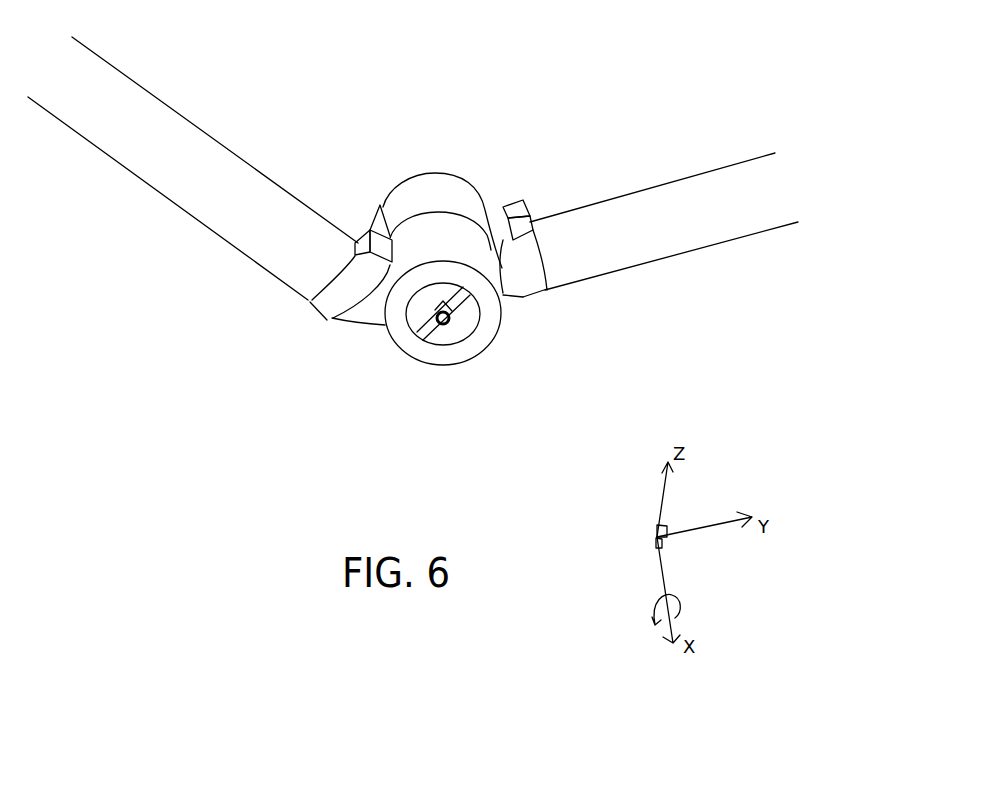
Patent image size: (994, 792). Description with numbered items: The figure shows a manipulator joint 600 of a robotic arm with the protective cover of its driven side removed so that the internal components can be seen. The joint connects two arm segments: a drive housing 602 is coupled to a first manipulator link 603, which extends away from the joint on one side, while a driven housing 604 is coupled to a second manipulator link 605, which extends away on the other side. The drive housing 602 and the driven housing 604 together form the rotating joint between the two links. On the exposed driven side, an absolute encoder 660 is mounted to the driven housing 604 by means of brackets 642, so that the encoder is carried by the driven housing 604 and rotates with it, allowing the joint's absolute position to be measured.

The manipulator joint 600 is at (537, 117).
The drive housing 602 is at (463, 181).
The first manipulator link 603 is at (623, 195).
The driven housing 604 is at (493, 330).
The second manipulator link 605 is at (205, 224).
The brackets 642 is at (465, 300).
The absolute encoder 660 is at (451, 323).